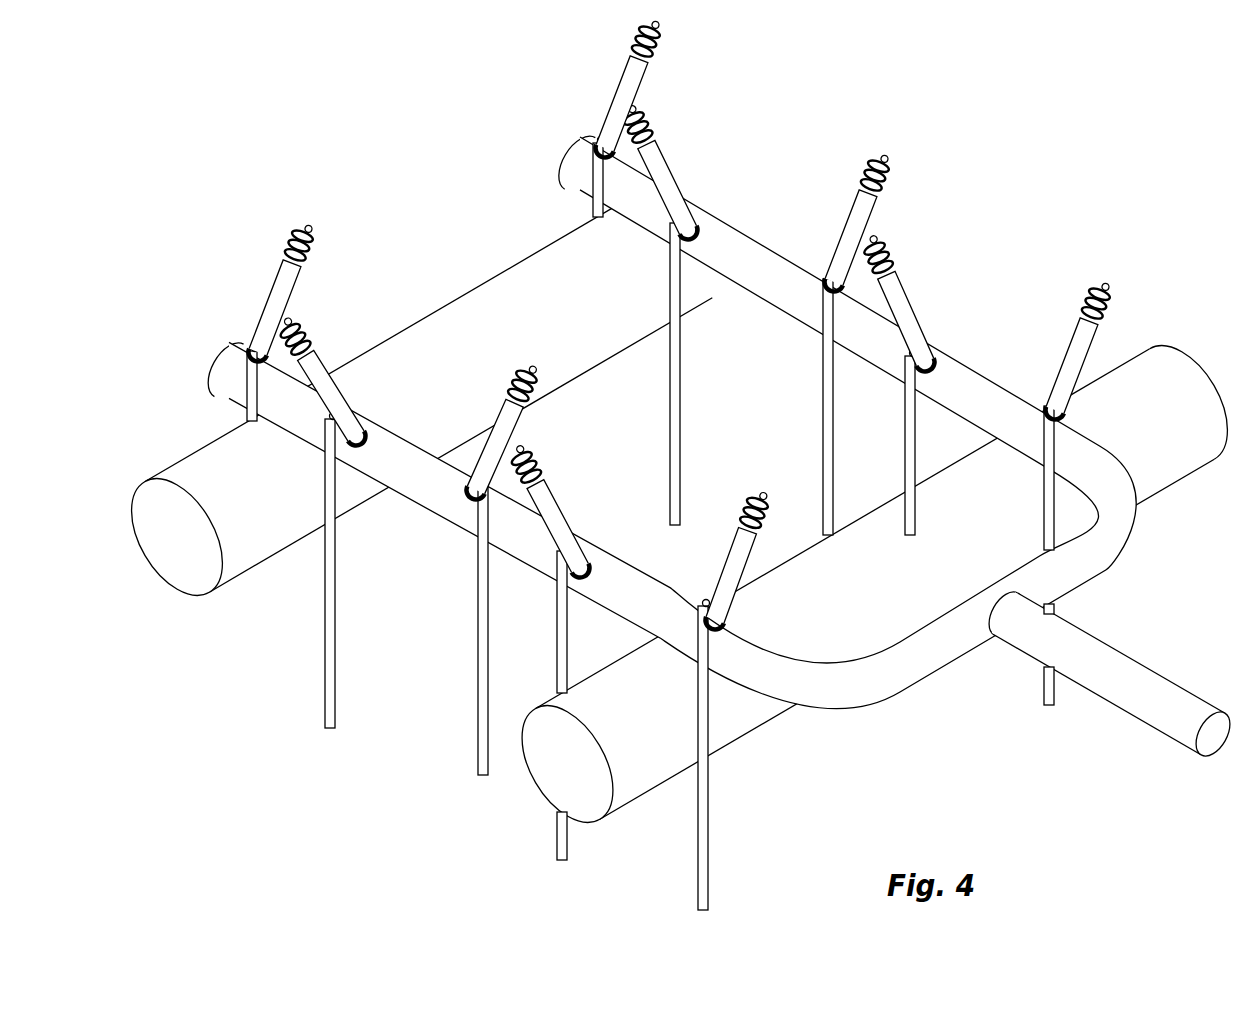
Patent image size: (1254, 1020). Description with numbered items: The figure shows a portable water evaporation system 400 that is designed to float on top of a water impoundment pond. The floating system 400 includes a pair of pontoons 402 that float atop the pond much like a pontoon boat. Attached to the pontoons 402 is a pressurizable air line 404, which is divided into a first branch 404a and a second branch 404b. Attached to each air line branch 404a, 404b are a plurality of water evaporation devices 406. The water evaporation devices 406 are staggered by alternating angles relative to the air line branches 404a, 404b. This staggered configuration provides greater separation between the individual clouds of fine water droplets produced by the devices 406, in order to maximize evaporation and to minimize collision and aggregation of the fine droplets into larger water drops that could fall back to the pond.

The portable water evaporation system 400 is at (670, 463).
The pontoons 402 is at (563, 333).
The pressurizable air line 404 is at (1145, 708).
The first branch 404a is at (570, 172).
The second branch 404b is at (212, 382).
The water evaporation devices 406 is at (657, 150).